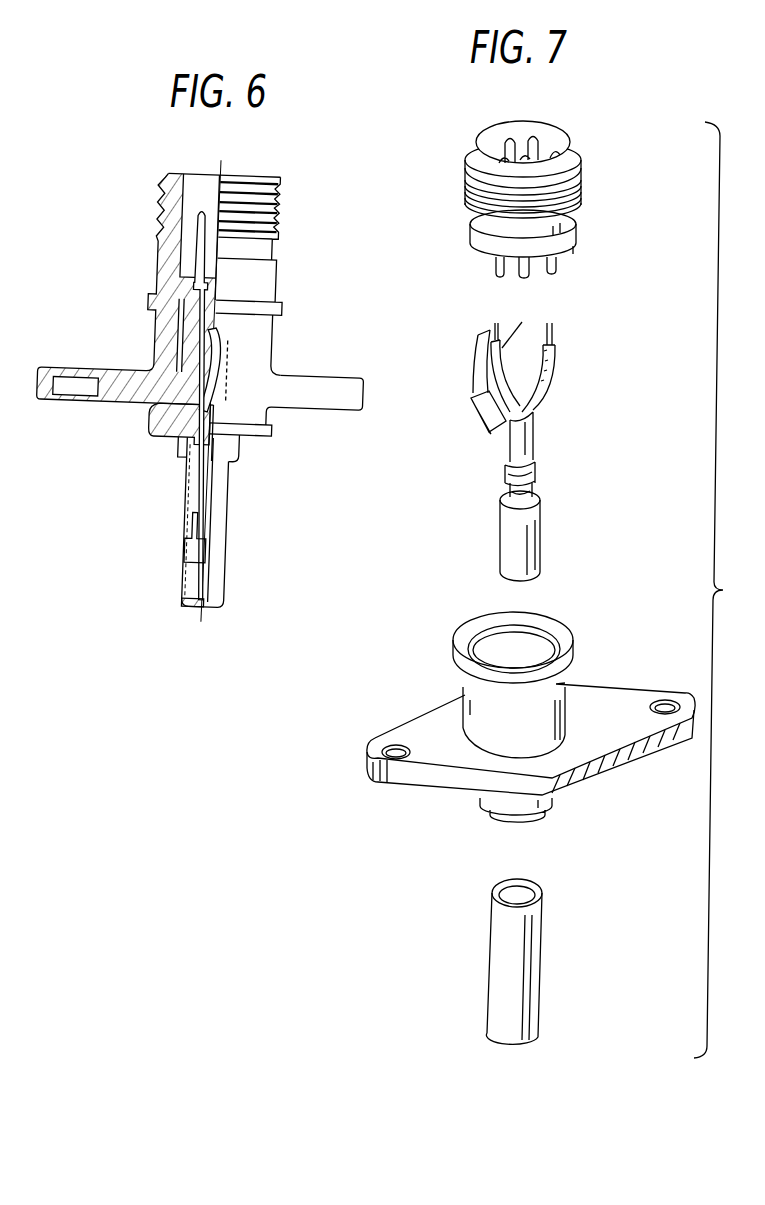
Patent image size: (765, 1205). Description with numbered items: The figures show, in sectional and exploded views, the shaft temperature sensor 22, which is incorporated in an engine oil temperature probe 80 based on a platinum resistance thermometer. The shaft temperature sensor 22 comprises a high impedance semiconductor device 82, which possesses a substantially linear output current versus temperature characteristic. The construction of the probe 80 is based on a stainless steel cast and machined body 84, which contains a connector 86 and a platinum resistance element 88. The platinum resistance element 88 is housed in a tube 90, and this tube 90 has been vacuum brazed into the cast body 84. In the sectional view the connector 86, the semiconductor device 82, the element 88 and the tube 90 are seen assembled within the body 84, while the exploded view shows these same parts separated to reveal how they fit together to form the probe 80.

In FIG. 6, the shaft temperature sensor 22 is at (201, 391).
In FIG. 7, the shaft temperature sensor 22 is at (525, 582).
In FIG. 6, the engine oil temperature probe 80 is at (281, 432).
In FIG. 6, the high impedance semiconductor device 82 is at (160, 435).
In FIG. 7, the high impedance semiconductor device 82 is at (482, 420).
In FIG. 6, the body 84 is at (160, 343).
In FIG. 7, the body 84 is at (555, 705).
In FIG. 6, the connector 86 is at (281, 213).
In FIG. 7, the connector 86 is at (580, 177).
In FIG. 6, the platinum resistance element 88 is at (193, 552).
In FIG. 7, the platinum resistance element 88 is at (540, 529).
In FIG. 6, the tube 90 is at (225, 538).
In FIG. 7, the tube 90 is at (535, 961).